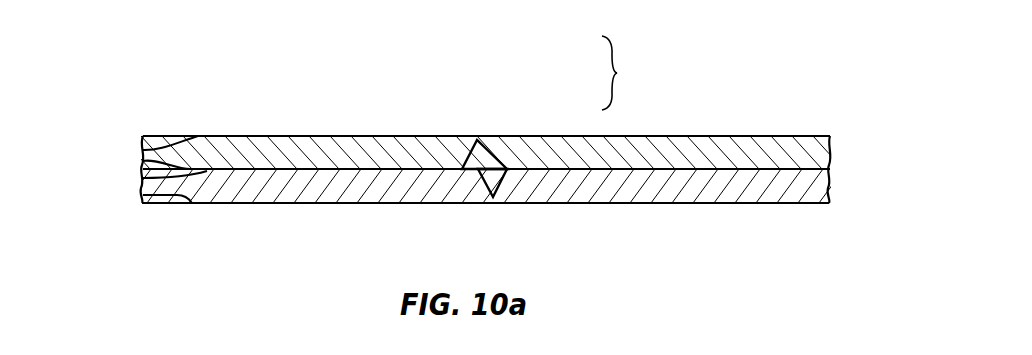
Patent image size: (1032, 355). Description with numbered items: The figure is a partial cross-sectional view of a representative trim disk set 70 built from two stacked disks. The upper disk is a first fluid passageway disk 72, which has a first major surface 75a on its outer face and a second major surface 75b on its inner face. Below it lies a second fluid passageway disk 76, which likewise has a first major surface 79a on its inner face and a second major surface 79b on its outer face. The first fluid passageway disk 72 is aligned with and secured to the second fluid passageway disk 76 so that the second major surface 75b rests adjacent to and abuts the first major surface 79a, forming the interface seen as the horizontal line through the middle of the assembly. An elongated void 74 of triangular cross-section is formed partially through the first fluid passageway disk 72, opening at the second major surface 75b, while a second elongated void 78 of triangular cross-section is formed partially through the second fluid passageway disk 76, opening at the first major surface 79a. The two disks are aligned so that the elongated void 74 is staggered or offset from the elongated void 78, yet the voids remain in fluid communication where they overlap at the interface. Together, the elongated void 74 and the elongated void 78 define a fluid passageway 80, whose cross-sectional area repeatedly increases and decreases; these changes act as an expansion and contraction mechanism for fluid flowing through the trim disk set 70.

The trim disk set 70 is at (818, 82).
The first fluid passageway disk 72 is at (797, 153).
The elongated void 74 is at (478, 158).
The first major surface 75a is at (143, 142).
The second major surface 75b is at (143, 152).
The second fluid passageway disk 76 is at (810, 189).
The elongated void 78 is at (493, 180).
The first major surface 79a is at (143, 178).
The second major surface 79b is at (143, 195).
The fluid passageway 80 is at (624, 73).